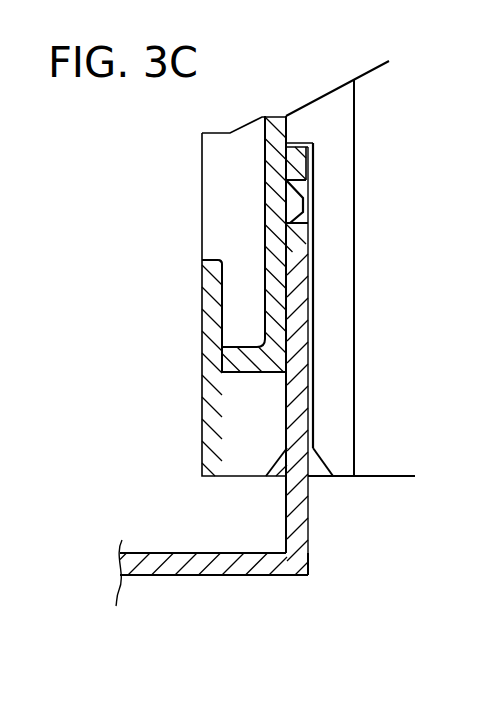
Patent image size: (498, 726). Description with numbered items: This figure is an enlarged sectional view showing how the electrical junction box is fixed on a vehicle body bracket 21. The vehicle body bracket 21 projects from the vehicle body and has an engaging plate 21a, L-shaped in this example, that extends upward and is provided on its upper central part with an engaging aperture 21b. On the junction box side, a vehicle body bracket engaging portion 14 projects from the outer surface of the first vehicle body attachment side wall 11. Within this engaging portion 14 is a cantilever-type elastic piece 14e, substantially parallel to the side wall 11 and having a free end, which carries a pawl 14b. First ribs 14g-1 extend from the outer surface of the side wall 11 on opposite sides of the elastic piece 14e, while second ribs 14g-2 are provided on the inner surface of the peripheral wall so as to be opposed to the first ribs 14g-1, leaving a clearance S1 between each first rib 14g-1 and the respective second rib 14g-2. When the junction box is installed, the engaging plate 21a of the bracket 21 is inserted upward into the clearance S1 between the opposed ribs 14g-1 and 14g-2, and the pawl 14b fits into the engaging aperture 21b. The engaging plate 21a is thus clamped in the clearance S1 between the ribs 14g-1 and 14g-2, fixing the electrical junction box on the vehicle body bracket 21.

The first vehicle body attachment side wall 11 is at (372, 90).
The vehicle body bracket engaging portion 14 is at (204, 305).
The pawl 14b is at (290, 205).
The elastic piece 14e is at (273, 256).
The first ribs 14g-1 is at (342, 462).
The second ribs 14g-2 is at (262, 460).
The vehicle body bracket 21 is at (172, 567).
The engaging plate 21a is at (300, 303).
The engaging aperture 21b is at (288, 223).
The clearance S1 is at (313, 428).